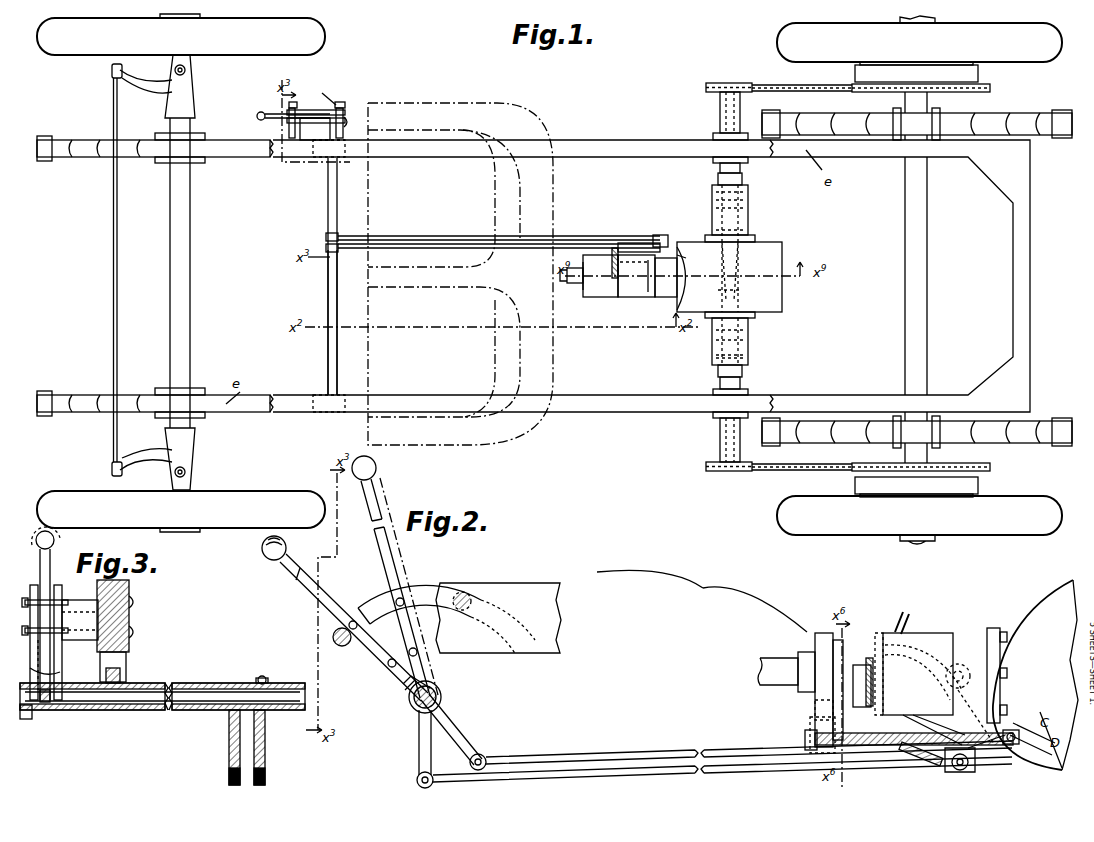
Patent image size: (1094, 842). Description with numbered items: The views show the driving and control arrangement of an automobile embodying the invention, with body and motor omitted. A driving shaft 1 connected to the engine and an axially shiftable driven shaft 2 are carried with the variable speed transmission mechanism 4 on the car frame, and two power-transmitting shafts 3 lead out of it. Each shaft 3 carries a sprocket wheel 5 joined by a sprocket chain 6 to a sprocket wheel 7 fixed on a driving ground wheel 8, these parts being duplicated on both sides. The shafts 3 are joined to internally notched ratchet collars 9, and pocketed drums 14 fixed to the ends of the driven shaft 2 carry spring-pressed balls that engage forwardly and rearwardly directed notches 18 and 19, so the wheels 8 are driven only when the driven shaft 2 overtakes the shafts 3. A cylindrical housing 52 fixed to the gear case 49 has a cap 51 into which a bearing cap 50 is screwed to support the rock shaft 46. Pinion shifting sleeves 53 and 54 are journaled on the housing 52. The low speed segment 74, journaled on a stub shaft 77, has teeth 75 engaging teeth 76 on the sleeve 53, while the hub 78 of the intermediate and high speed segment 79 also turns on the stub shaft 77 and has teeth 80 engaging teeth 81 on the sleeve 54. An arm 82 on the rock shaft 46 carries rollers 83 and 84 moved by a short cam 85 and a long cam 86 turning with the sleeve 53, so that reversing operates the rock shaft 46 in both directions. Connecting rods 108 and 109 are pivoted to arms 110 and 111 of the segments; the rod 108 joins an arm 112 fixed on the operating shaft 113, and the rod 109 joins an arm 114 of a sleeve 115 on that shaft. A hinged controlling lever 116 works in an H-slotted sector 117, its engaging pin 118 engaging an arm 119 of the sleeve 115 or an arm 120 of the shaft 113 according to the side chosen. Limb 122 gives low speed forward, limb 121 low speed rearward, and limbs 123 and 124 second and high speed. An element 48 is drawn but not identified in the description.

In FIG. 1, the driving shaft 1 is at (572, 284).
In FIG. 2, the driving shaft 1 is at (780, 667).
In FIG. 1, the axially shiftable driven shaft 2 is at (734, 272).
In FIG. 1, the power-transmitting shafts 3 is at (718, 113).
In FIG. 1, the variable speed transmission mechanism 4 is at (767, 238).
In FIG. 2, the variable speed transmission mechanism 4 is at (1012, 600).
In FIG. 1, the sprocket wheels 5 is at (708, 84).
In FIG. 1, the sprocket chains 6 is at (792, 86).
In FIG. 1, the sprocket wheels 7 is at (978, 91).
In FIG. 1, the driving ground wheels 8 is at (919, 280).
In FIG. 1, the internally notched ratchet collars 9 is at (748, 196).
In FIG. 1, the pocketed drums 14 is at (750, 204).
In FIG. 1, the forwardly directed internal driving notches 18 is at (712, 200).
In FIG. 1, the rearwardly directed internal driving notches 19 is at (712, 226).
In FIG. 2, the rock shaft 46 is at (1008, 746).
In FIG. 2, the link 48 is at (1036, 750).
In FIG. 1, the gear case 49 is at (735, 288).
In FIG. 2, the gear case 49 is at (1038, 621).
In FIG. 2, the bearing cap 50 is at (805, 740).
In FIG. 2, the cap 51 is at (808, 652).
In FIG. 1, the cylindrical housing 52 is at (668, 297).
In FIG. 2, the cylindrical housing 52 is at (990, 640).
In FIG. 1, the pinion shifting sleeve 53 is at (613, 297).
In FIG. 2, the pinion shifting sleeve 53 is at (824, 633).
In FIG. 1, the pinion shifting sleeve 54 is at (646, 297).
In FIG. 2, the pinion shifting sleeve 54 is at (918, 674).
In FIG. 1, the low speed segment 74 is at (640, 243).
In FIG. 2, the low speed segment 74 is at (932, 740).
In FIG. 1, the teeth 75 is at (576, 268).
In FIG. 2, the teeth 75 is at (955, 766).
In FIG. 1, the teeth 76 is at (612, 275).
In FIG. 2, the teeth 76 is at (845, 660).
In FIG. 1, the stub shaft 77 is at (662, 235).
In FIG. 2, the stub shaft 77 is at (950, 680).
In FIG. 1, the hub 78 is at (684, 257).
In FIG. 1, the intermediate and high speed segment 79 is at (635, 264).
In FIG. 2, the intermediate and high speed segment 79 is at (906, 634).
In FIG. 1, the teeth 80 is at (615, 248).
In FIG. 2, the teeth 80 is at (903, 622).
In FIG. 1, the teeth 81 is at (620, 275).
In FIG. 2, the teeth 81 is at (879, 633).
In FIG. 2, the arm 82 is at (848, 752).
In FIG. 2, the roller 83 is at (815, 722).
In FIG. 2, the roller 84 is at (888, 747).
In FIG. 2, the short cam 85 is at (866, 685).
In FIG. 2, the long cam 86 is at (858, 670).
In FIG. 1, the connecting rod 108 is at (405, 248).
In FIG. 2, the connecting rod 108 is at (636, 758).
In FIG. 3, the connecting rod 108 is at (265, 776).
In FIG. 1, the connecting rod 109 is at (395, 238).
In FIG. 2, the connecting rod 109 is at (732, 768).
In FIG. 3, the connecting rod 109 is at (229, 776).
In FIG. 2, the arm 110 is at (1010, 726).
In FIG. 2, the arm 111 is at (970, 740).
In FIG. 1, the arm 112 is at (326, 247).
In FIG. 2, the arm 112 is at (460, 730).
In FIG. 3, the arm 112 is at (265, 742).
In FIG. 1, the operating shaft 113 is at (337, 300).
In FIG. 2, the operating shaft 113 is at (441, 697).
In FIG. 3, the operating shaft 113 is at (240, 692).
In FIG. 1, the arm 114 is at (326, 236).
In FIG. 2, the arm 114 is at (418, 760).
In FIG. 3, the arm 114 is at (229, 740).
In FIG. 1, the sleeve 115 is at (337, 190).
In FIG. 3, the sleeve 115 is at (186, 684).
In FIG. 1, the controlling lever 116 is at (278, 107).
In FIG. 2, the controlling lever 116 is at (372, 489).
In FIG. 3, the controlling lever 116 is at (37, 535).
In FIG. 1, the H-slotted sector 117 is at (330, 88).
In FIG. 2, the H-slotted sector 117 is at (426, 580).
In FIG. 3, the H-slotted sector 117 is at (30, 573).
In FIG. 2, the engaging pin 118 is at (360, 606).
In FIG. 3, the engaging pin 118 is at (58, 592).
In FIG. 2, the arm 119 is at (408, 632).
In FIG. 3, the arm 119 is at (60, 665).
In FIG. 2, the arm 120 is at (356, 652).
In FIG. 3, the arm 120 is at (40, 678).
In FIG. 1, the limb 121 is at (292, 110).
In FIG. 3, the limb 121 is at (30, 614).
In FIG. 1, the limb 122 is at (342, 106).
In FIG. 1, the limb 123 is at (349, 121).
In FIG. 1, the limb 124 is at (321, 129).
In FIG. 3, the limb 124 is at (97, 631).